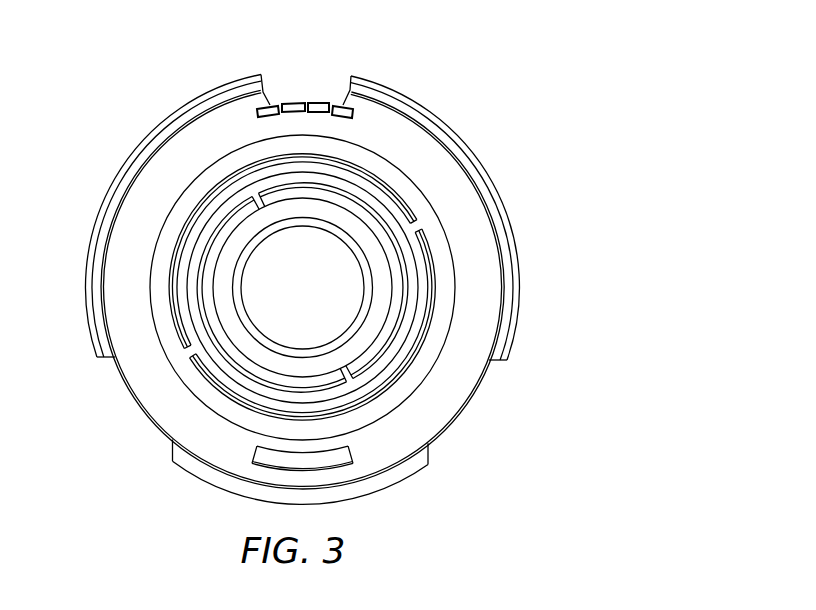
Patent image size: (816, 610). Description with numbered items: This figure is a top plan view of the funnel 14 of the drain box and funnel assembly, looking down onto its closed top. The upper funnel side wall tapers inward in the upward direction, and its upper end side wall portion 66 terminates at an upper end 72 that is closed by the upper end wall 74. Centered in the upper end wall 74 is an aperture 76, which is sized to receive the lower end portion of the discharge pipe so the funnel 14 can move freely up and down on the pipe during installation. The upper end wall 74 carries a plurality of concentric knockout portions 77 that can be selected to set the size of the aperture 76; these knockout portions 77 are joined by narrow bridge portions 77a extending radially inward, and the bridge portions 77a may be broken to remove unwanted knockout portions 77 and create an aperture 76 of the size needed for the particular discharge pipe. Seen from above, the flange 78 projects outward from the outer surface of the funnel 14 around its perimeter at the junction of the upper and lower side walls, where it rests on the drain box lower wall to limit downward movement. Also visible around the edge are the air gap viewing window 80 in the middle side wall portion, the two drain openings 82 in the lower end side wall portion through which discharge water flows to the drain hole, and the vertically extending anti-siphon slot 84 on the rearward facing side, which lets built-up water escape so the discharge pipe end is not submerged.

The funnel 14 is at (622, 128).
The upper end side wall portion 66 is at (468, 152).
The upper end 72 is at (500, 252).
The upper end wall 74 is at (400, 135).
The aperture 76 is at (333, 272).
The knockout portions 77 is at (387, 358).
The bridge portions 77a is at (256, 205).
The flange 78 is at (510, 342).
The air gap viewing window 80 is at (278, 460).
The drain openings 82 is at (108, 380).
The anti-siphon slot 84 is at (313, 80).